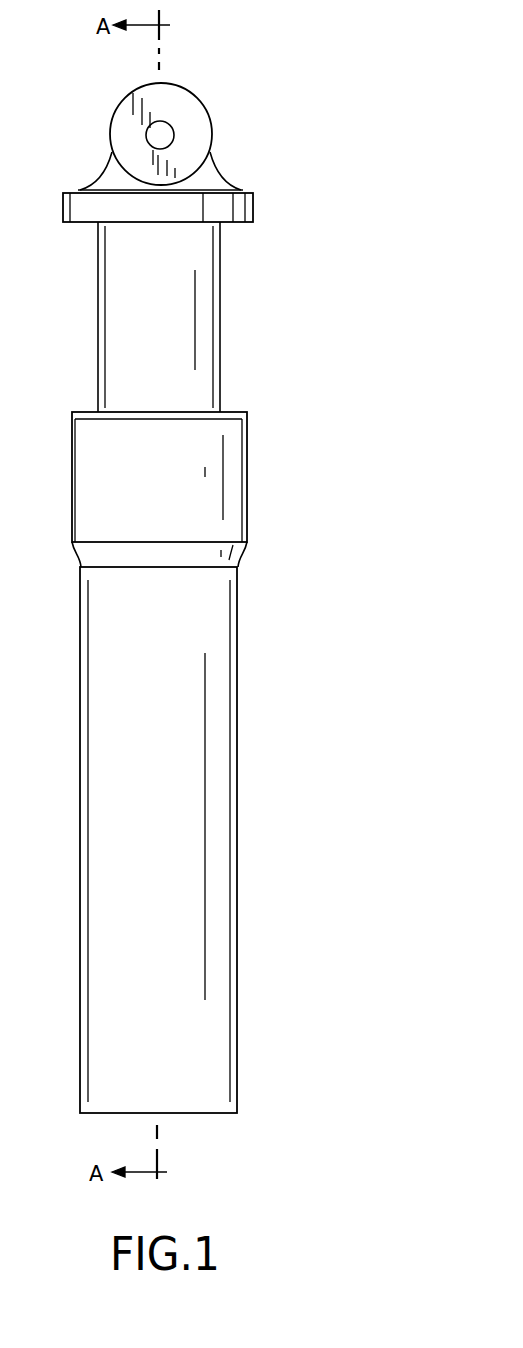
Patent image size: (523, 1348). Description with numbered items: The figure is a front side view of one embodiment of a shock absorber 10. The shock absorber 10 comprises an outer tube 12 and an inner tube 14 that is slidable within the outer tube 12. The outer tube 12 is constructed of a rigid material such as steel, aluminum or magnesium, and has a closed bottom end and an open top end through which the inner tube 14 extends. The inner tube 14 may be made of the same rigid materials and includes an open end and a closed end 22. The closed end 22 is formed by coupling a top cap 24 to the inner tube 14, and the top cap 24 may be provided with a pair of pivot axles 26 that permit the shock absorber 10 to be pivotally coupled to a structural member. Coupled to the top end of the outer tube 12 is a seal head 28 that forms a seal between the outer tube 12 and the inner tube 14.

The shock absorber 10 is at (237, 592).
The outer tube 12 is at (213, 675).
The inner tube 14 is at (205, 382).
The closed end 22 is at (220, 224).
The top cap 24 is at (208, 168).
The pivot axles 26 is at (190, 118).
The seal head 28 is at (90, 410).